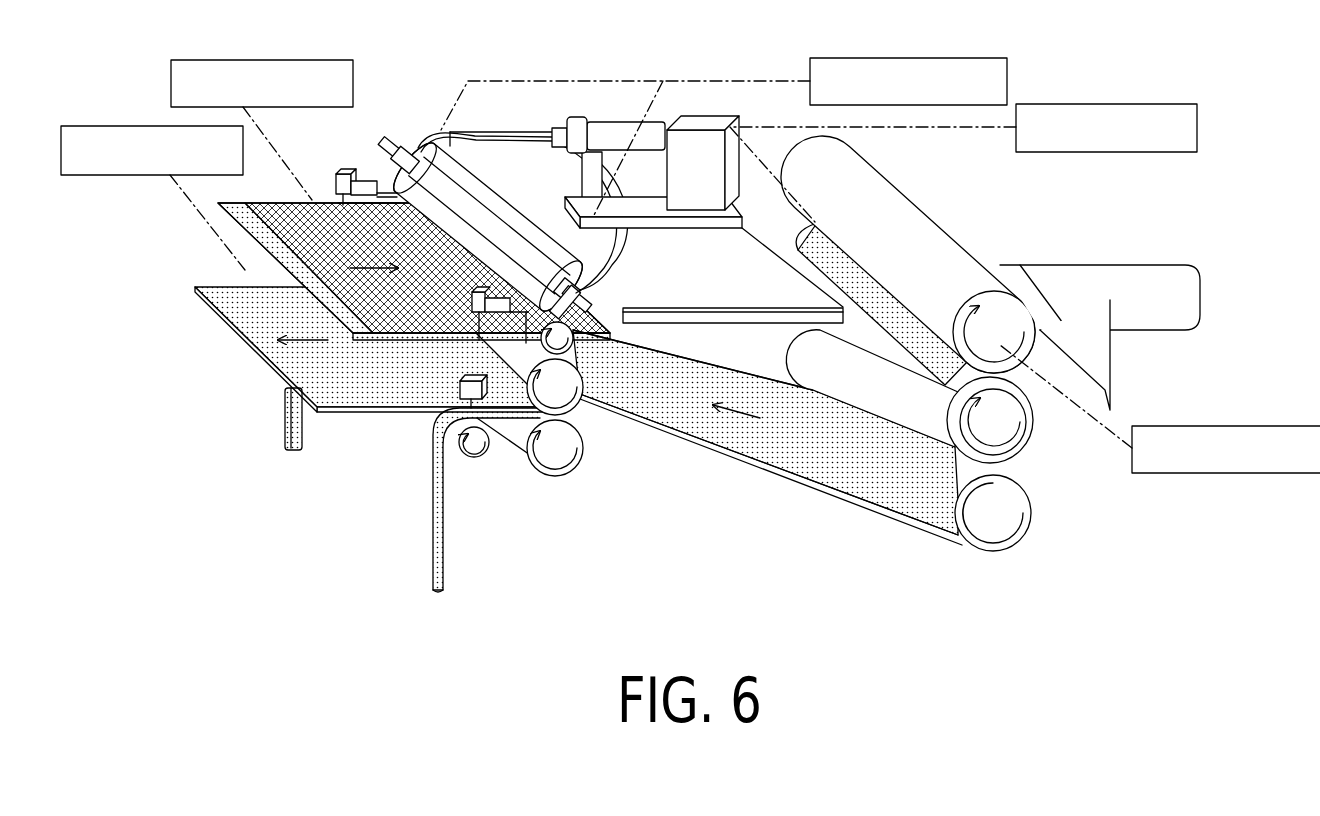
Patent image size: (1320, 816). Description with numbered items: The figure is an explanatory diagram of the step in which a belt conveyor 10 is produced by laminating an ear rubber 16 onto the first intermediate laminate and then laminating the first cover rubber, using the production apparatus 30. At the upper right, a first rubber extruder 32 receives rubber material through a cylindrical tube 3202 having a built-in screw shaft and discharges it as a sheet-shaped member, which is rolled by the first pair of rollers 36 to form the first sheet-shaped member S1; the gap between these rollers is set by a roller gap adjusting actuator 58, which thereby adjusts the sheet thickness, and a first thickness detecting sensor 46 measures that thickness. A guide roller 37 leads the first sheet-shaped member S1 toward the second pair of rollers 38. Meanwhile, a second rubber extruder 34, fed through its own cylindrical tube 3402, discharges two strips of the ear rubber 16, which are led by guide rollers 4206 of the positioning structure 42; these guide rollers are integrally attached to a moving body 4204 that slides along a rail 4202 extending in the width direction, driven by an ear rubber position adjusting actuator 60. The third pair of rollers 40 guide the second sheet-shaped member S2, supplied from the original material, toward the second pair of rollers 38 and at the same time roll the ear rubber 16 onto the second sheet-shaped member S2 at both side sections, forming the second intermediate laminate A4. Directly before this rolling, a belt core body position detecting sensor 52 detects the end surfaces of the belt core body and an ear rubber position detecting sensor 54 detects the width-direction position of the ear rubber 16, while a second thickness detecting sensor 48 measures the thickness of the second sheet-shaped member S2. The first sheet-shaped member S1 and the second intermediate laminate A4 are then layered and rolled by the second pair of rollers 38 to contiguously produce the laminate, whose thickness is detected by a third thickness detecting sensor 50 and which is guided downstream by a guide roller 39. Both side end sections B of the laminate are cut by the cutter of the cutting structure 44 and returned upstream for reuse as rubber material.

The belt conveyor 10 is at (258, 363).
The ear rubber 16 is at (463, 163).
The production apparatus 30 is at (783, 63).
The first rubber extruder 32 is at (985, 242).
The cylindrical tube 3202 is at (1105, 265).
The second rubber extruder 34 is at (625, 122).
The cylindrical tube 3402 is at (610, 120).
The first pair of rollers 36 is at (1028, 300).
The guide roller 37 is at (1040, 512).
The second pair of rollers 38 is at (565, 480).
The guide roller 39 is at (477, 457).
The third pair of rollers 40 is at (580, 340).
The positioning structure 42 is at (417, 130).
The rail 4202 is at (513, 233).
The moving body 4204 is at (600, 305).
The guide rollers 4206 is at (585, 290).
The cutting structure 44 is at (457, 380).
The first thickness detecting sensor 46 is at (1095, 104).
The second thickness detecting sensor 48 is at (215, 58).
The third thickness detecting sensor 50 is at (118, 126).
The belt core body position detecting sensor 52 is at (346, 170).
The ear rubber position detecting sensor 54 is at (358, 178).
The roller gap adjusting actuator 58 is at (1240, 426).
The ear rubber position adjusting actuator 60 is at (1007, 62).
The first sheet-shaped member S1 is at (868, 296).
The second sheet-shaped member S2 is at (258, 258).
The second intermediate laminate A4 is at (582, 364).
The side end sections B is at (447, 513).